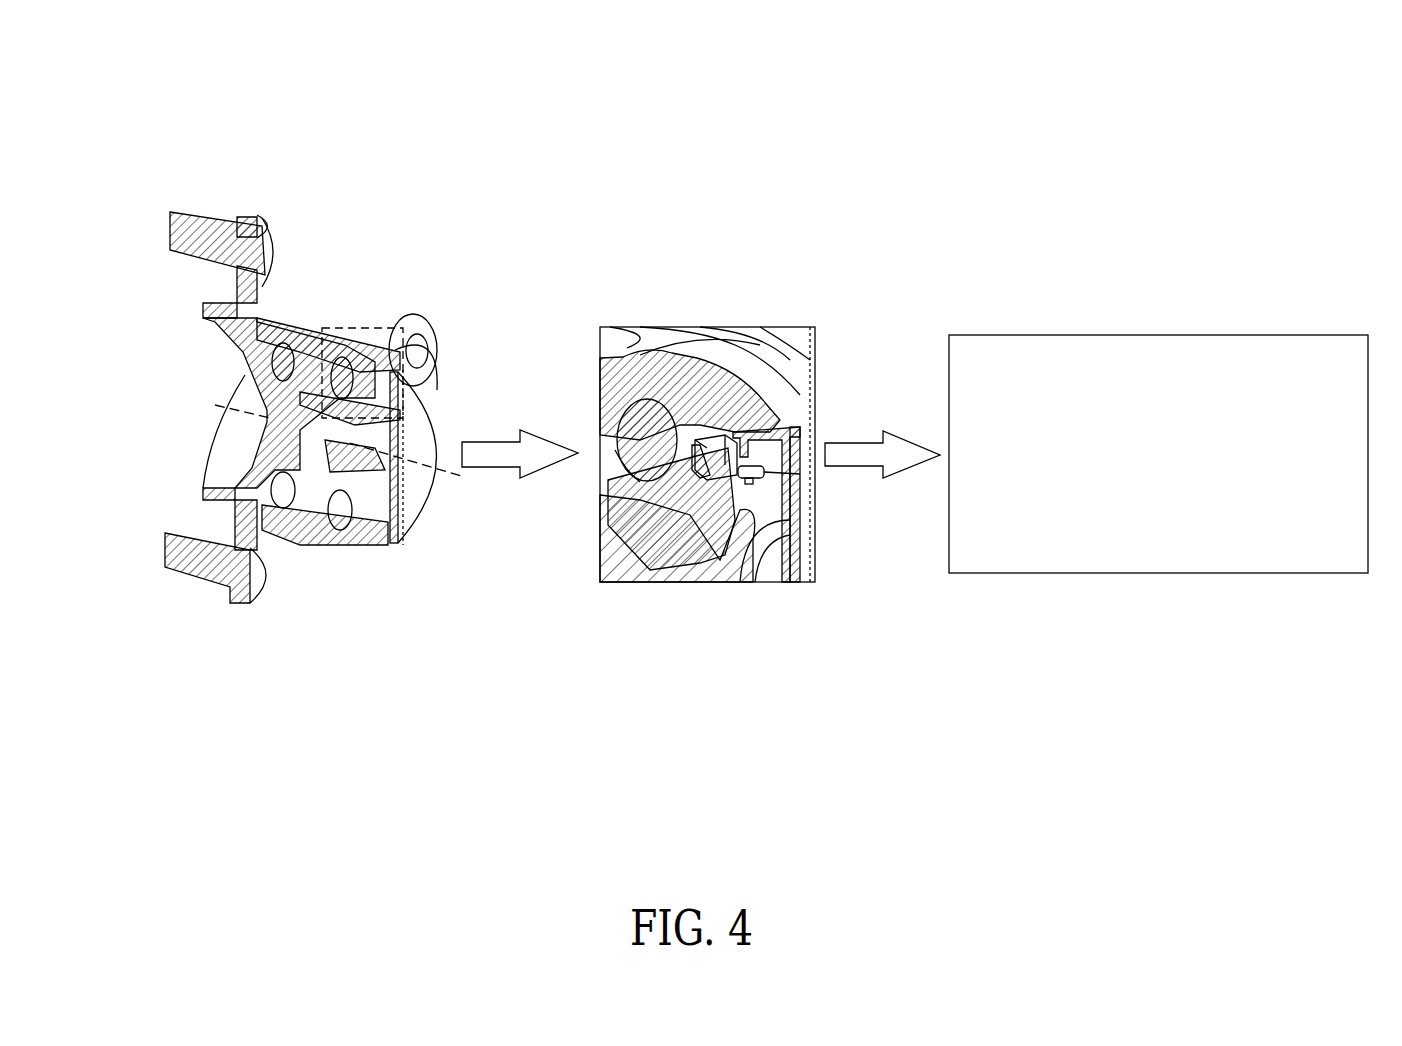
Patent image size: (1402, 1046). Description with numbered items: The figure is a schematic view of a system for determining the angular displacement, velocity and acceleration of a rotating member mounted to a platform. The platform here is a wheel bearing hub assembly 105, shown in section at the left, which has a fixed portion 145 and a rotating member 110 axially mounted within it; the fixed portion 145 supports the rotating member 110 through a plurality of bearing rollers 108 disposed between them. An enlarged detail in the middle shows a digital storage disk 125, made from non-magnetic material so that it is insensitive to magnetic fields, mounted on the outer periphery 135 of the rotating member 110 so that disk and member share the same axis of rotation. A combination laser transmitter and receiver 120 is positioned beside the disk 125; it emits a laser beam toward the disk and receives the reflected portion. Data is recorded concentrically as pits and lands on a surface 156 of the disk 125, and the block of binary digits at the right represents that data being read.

The platform 105 is at (193, 150).
The bearing rollers 108 is at (270, 360).
The rotating member 110 is at (270, 410).
The fixed portion 145 is at (417, 320).
The outer periphery 135 is at (724, 437).
The digital storage disk 125 is at (802, 425).
The combination laser transmitter and receiver 120 is at (727, 480).
The surface 156 is at (1175, 326).